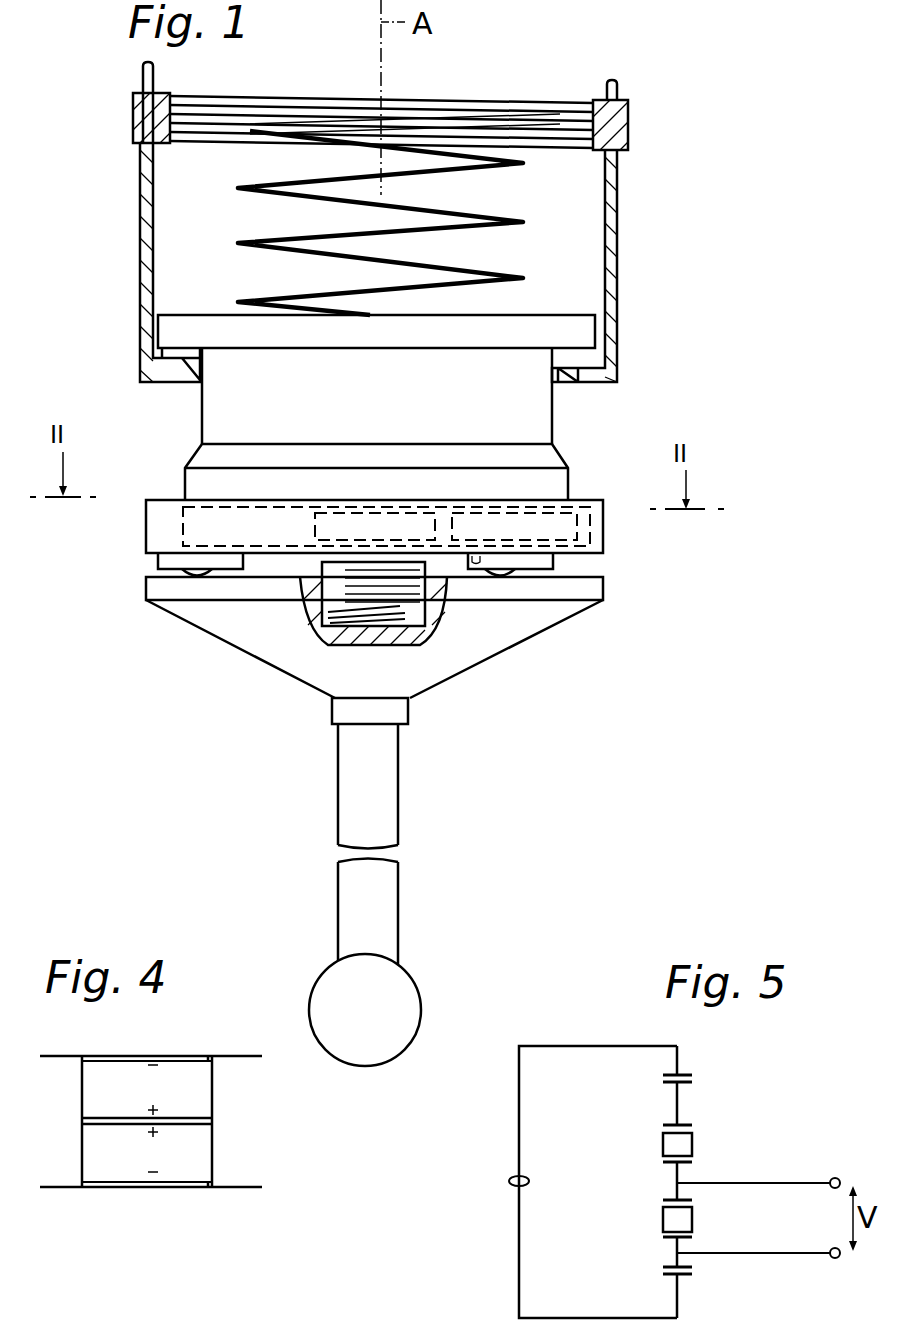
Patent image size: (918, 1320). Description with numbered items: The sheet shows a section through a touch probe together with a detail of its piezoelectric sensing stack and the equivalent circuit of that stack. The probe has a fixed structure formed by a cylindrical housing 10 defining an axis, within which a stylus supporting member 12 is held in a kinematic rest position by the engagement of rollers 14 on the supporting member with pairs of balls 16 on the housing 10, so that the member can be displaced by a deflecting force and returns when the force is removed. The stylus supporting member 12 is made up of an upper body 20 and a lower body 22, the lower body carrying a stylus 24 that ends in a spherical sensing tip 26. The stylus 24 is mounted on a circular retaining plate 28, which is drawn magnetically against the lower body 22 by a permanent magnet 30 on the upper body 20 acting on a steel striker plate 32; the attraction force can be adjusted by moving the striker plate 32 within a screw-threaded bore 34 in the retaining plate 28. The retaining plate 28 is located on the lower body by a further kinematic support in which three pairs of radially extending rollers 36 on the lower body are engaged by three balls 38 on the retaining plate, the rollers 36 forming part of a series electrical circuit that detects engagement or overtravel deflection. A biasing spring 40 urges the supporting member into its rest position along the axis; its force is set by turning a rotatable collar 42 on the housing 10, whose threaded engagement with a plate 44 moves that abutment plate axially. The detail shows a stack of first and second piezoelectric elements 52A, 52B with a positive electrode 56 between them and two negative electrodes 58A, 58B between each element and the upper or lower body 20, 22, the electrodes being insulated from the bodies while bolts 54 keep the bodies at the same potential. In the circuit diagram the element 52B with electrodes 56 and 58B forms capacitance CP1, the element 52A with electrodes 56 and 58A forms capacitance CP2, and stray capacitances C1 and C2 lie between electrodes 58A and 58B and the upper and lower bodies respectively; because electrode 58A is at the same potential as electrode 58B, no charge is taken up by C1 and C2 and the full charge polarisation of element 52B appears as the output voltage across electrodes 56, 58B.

In FIG. 1, the cylindrical housing 10 is at (612, 262).
In FIG. 1, the stylus supporting member 12 is at (586, 463).
In FIG. 1, the rollers 14 is at (185, 345).
In FIG. 1, the balls 16 is at (180, 358).
In FIG. 1, the upper body 20 is at (546, 428).
In FIG. 4, the upper body 20 is at (60, 1048).
In FIG. 5, the upper body 20 is at (668, 1078).
In FIG. 1, the lower body 22 is at (604, 538).
In FIG. 4, the lower body 22 is at (55, 1193).
In FIG. 5, the lower body 22 is at (672, 1276).
In FIG. 1, the stylus 24 is at (391, 789).
In FIG. 1, the spherical sensing tip 26 is at (404, 993).
In FIG. 1, the retaining plate 28 is at (604, 597).
In FIG. 1, the permanent magnet 30 is at (400, 520).
In FIG. 1, the steel striker plate 32 is at (428, 600).
In FIG. 1, the screw-threaded bore 34 is at (310, 628).
In FIG. 1, the rollers 36 is at (170, 556).
In FIG. 1, the balls 38 is at (205, 574).
In FIG. 1, the biasing spring 40 is at (503, 212).
In FIG. 1, the rotatable collar 42 is at (628, 133).
In FIG. 1, the plate 44 is at (490, 118).
In FIG. 4, the first piezoelectric element 52A is at (138, 1063).
In FIG. 4, the second piezoelectric element 52B is at (135, 1175).
In FIG. 5, the bolts 54 is at (509, 1181).
In FIG. 4, the positive electrode 56 is at (213, 1122).
In FIG. 5, the positive electrode 56 is at (668, 1200).
In FIG. 4, the negative electrode 58A is at (213, 1058).
In FIG. 5, the negative electrode 58A is at (668, 1122).
In FIG. 4, the negative electrode 58B is at (207, 1190).
In FIG. 5, the negative electrode 58B is at (668, 1264).
In FIG. 5, the stray capacitance C1 is at (708, 1060).
In FIG. 5, the stray capacitance C2 is at (705, 1284).
In FIG. 5, the capacitance of second piezoelectric element CP1 is at (712, 1223).
In FIG. 5, the capacitance of first piezoelectric element CP2 is at (712, 1144).